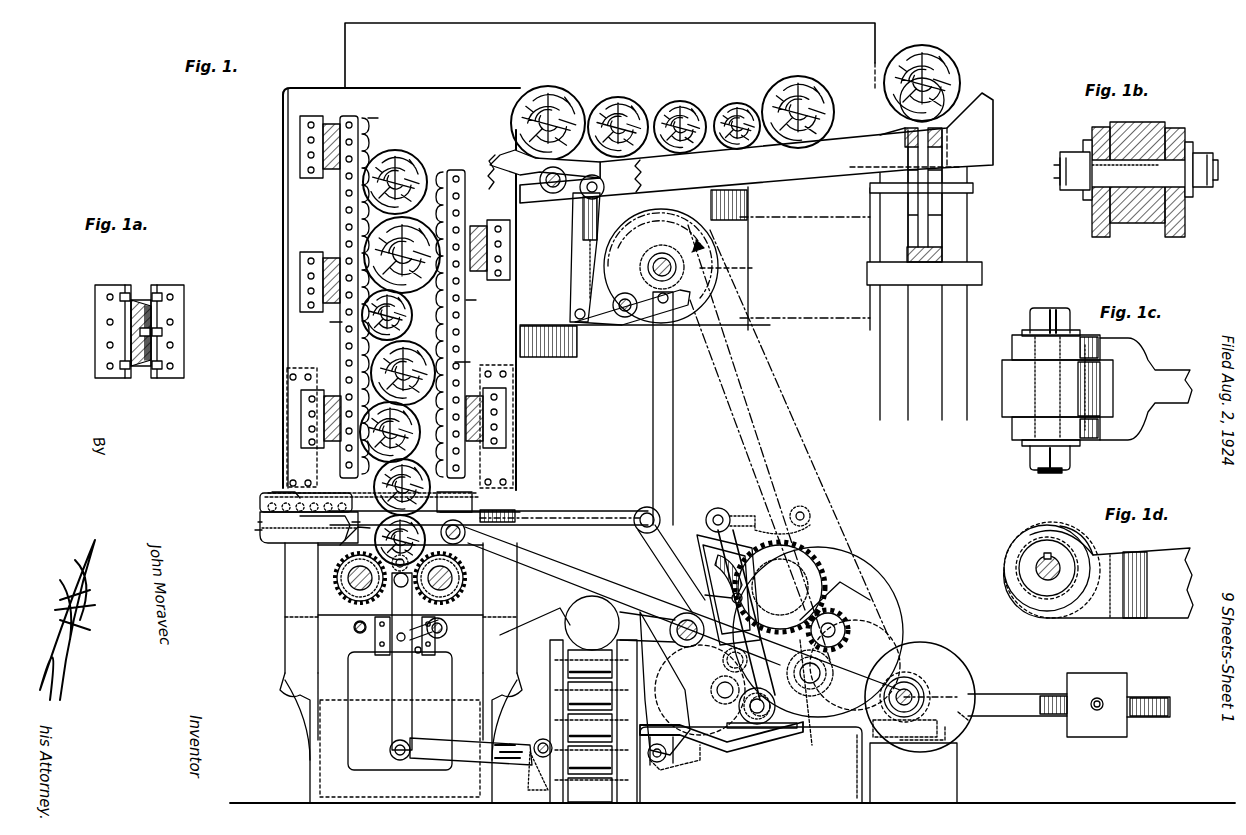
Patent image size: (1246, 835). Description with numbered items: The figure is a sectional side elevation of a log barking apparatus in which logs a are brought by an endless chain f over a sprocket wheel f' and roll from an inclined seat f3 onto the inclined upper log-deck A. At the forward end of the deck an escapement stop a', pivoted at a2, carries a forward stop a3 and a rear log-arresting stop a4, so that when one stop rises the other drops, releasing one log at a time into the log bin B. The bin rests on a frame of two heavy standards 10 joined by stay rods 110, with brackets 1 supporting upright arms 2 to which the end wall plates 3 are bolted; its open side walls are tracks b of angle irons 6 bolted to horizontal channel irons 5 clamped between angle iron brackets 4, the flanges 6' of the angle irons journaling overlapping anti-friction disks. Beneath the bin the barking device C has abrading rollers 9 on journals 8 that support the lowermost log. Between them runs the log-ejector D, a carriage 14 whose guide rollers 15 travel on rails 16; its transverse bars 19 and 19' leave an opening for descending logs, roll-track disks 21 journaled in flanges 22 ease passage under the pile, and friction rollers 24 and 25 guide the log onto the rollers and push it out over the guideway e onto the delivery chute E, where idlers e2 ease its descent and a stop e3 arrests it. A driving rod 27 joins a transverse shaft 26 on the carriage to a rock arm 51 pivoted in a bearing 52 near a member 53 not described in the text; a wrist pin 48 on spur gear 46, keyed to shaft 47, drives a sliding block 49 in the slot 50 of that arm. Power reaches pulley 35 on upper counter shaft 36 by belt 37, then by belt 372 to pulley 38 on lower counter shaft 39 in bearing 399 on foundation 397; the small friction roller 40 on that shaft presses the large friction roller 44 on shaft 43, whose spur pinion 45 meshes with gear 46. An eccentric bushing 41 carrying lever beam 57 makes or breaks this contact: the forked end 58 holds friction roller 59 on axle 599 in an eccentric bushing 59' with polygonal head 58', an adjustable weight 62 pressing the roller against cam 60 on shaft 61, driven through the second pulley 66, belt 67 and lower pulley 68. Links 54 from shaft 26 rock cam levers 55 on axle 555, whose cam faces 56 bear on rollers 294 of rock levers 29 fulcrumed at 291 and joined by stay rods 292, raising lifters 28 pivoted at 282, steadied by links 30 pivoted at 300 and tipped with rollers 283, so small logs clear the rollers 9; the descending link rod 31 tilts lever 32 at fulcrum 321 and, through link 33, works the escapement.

In FIG. 1, the brackets 1 is at (285, 665).
In FIG. 1, the upright arms 2 is at (401, 608).
In FIG. 1, the wall plates 3 is at (401, 289).
In FIG. 1, the angle iron brackets 4 is at (300, 148).
In FIG. 1A, the angle iron brackets 4 is at (104, 285).
In FIG. 1, the channel irons 5 is at (330, 178).
In FIG. 1A, the channel irons 5 is at (144, 300).
In FIG. 1, the angle irons 6 is at (399, 297).
In FIG. 1, the flanges 6' is at (479, 303).
In FIG. 1, the journals 8 is at (348, 580).
In FIG. 1, the abrading rollers 9 is at (345, 590).
In FIG. 1, the standards 10 is at (320, 730).
In FIG. 1, the carriage 14 is at (258, 533).
In FIG. 1, the guide rollers 15 is at (260, 502).
In FIG. 1, the rails 16 is at (258, 518).
In FIG. 1, the transverse bar 19 is at (294, 541).
In FIG. 1, the transverse bar 19' is at (422, 521).
In FIG. 1, the anti-friction rollers 21 is at (282, 488).
In FIG. 1, the flanges 22 is at (372, 488).
In FIG. 1, the friction rollers 24 is at (478, 492).
In FIG. 1, the friction rollers 25 is at (346, 544).
In FIG. 1, the transverse shaft 26 is at (505, 540).
In FIG. 1, the driving rod 27 is at (680, 518).
In FIG. 1, the lifters 28 is at (412, 690).
In FIG. 1, the rock levers 29 is at (445, 748).
In FIG. 1, the link 30 is at (418, 655).
In FIG. 1, the link rod 31 is at (652, 434).
In FIG. 1, the lever 32 is at (618, 318).
In FIG. 1, the link 33 is at (574, 256).
In FIG. 1, the pulley 35 is at (710, 240).
In FIG. 1, the upper counter shaft 36 is at (662, 258).
In FIG. 1, the belt 37 is at (785, 258).
In FIG. 1, the pulley 38 is at (915, 690).
In FIG. 1, the lower counter shaft 39 is at (907, 688).
In FIG. 1, the small friction roller 40 is at (928, 697).
In FIG. 1, the eccentric bushing 41 is at (905, 730).
In FIG. 1, the shaft 43 is at (835, 628).
In FIG. 1, the large friction roller 44 is at (840, 565).
In FIG. 1, the spur pinion 45 is at (835, 601).
In FIG. 1, the spur gear 46 is at (758, 517).
In FIG. 1, the shaft 47 is at (780, 587).
In FIG. 1, the wrist pin 48 is at (705, 595).
In FIG. 1, the sliding block 49 is at (728, 590).
In FIG. 1, the slot 50 is at (712, 560).
In FIG. 1, the rock arm 51 is at (759, 684).
In FIG. 1, the bearing 52 is at (754, 693).
In FIG. 1, the housing 53 is at (751, 765).
In FIG. 1, the links 54 is at (598, 517).
In FIG. 1, the rocking cam levers 55 is at (640, 550).
In FIG. 1, the cam faces 56 is at (748, 740).
In FIG. 1, the lever beam 57 is at (1008, 696).
In FIG. 1C, the lever beam 57 is at (1165, 372).
In FIG. 1D, the lever beam 57 is at (1120, 572).
In FIG. 1, the forked end 58 is at (772, 706).
In FIG. 1B, the forked end 58 is at (1144, 194).
In FIG. 1C, the forked end 58 is at (1048, 391).
In FIG. 1D, the forked end 58 is at (1049, 589).
In FIG. 1B, the polygonal head 58' is at (1194, 142).
In FIG. 1C, the polygonal head 58' is at (1050, 305).
In FIG. 1, the friction roller 59 is at (717, 690).
In FIG. 1B, the friction roller 59 is at (1137, 159).
In FIG. 1C, the friction roller 59 is at (1057, 388).
In FIG. 1D, the friction roller 59 is at (1029, 568).
In FIG. 1B, the eccentric bushing 59' is at (1200, 180).
In FIG. 1C, the eccentric bushing 59' is at (1044, 307).
In FIG. 1, the cam 60 is at (665, 683).
In FIG. 1, the shaft 61 is at (722, 662).
In FIG. 1, the adjustable weight 62 is at (1103, 737).
In FIG. 1, the second pulley 66 is at (739, 255).
In FIG. 1, the belt or chain 67 is at (778, 415).
In FIG. 1, the lower pulley 68 is at (843, 682).
In FIG. 1, the stay rods 110 is at (360, 632).
In FIG. 1, the pivot 282 is at (392, 752).
In FIG. 1, the friction rollers 283 is at (377, 636).
In FIG. 1, the fulcrum 291 is at (540, 742).
In FIG. 1, the stay rods 292 is at (668, 765).
In FIG. 1, the anti-friction rollers 294 is at (745, 740).
In FIG. 1, the pivot 300 is at (398, 590).
In FIG. 1, the fulcrum 321 is at (625, 298).
In FIG. 1, the belt 372 is at (818, 402).
In FIG. 1, the foundation 397 is at (913, 773).
In FIG. 1, the bearing 399 is at (965, 732).
In FIG. 1, the axle 555 is at (672, 620).
In FIG. 1B, the axle 599 is at (1141, 173).
In FIG. 1D, the axle 599 is at (1038, 575).
In FIG. 1, the logs a is at (660, 347).
In FIG. 1, the escapement stop a' is at (582, 203).
In FIG. 1, the pivot a2 is at (550, 193).
In FIG. 1, the stop a3 is at (498, 162).
In FIG. 1, the log-arresting stop a4 is at (626, 176).
In FIG. 1, the upper log-deck A is at (756, 148).
In FIG. 1, the log bin B is at (630, 310).
In FIG. 1, the tracks b is at (401, 342).
In FIG. 1, the barking device C is at (434, 558).
In FIG. 1, the log-ejector D is at (309, 536).
In FIG. 1, the delivery chute E is at (581, 721).
In FIG. 1, the guideway e is at (535, 623).
In FIG. 1, the anti-friction idlers e2 is at (590, 726).
In FIG. 1, the stop e3 is at (647, 627).
In FIG. 1, the endless chain f is at (919, 274).
In FIG. 1, the sprocket wheel f' is at (899, 197).
In FIG. 1, the seat f3 is at (870, 135).